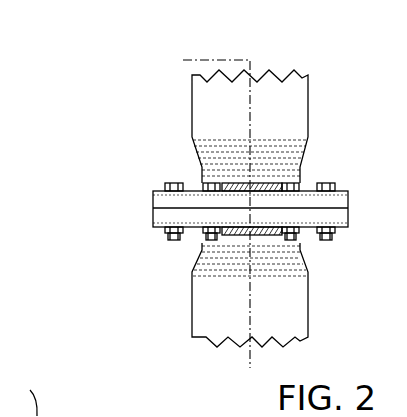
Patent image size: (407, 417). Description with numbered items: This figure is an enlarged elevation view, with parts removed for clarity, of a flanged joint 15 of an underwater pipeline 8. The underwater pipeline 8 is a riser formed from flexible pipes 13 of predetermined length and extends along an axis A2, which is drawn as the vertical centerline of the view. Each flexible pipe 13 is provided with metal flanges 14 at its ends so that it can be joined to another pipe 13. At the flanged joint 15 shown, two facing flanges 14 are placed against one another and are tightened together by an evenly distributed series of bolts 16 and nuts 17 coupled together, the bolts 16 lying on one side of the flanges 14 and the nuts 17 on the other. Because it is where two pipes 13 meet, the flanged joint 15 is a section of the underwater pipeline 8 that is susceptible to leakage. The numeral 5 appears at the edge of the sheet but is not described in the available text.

The underwater pipeline 8 is at (347, 88).
The axis A2 is at (204, 210).
The flexible pipe 13 is at (210, 104).
The metal flange 14 is at (153, 198).
The flanged joint 15 is at (88, 210).
The bolt 16 is at (166, 183).
The nut 17 is at (162, 241).
The pipeline 5 is at (26, 400).